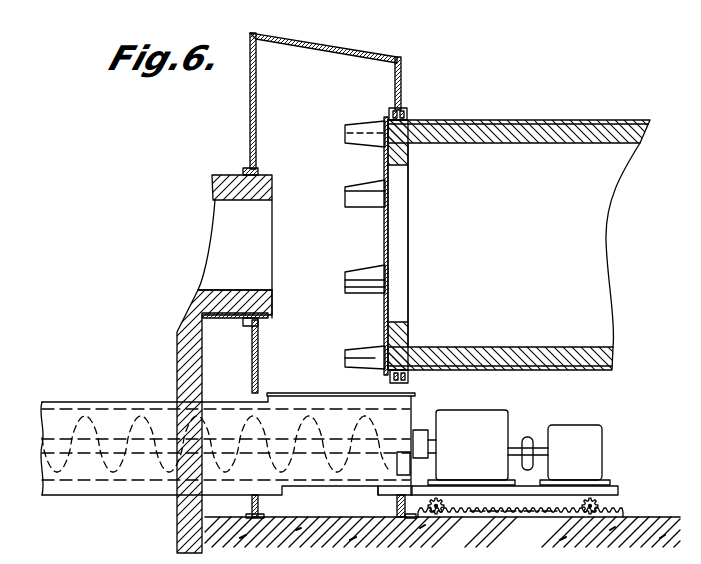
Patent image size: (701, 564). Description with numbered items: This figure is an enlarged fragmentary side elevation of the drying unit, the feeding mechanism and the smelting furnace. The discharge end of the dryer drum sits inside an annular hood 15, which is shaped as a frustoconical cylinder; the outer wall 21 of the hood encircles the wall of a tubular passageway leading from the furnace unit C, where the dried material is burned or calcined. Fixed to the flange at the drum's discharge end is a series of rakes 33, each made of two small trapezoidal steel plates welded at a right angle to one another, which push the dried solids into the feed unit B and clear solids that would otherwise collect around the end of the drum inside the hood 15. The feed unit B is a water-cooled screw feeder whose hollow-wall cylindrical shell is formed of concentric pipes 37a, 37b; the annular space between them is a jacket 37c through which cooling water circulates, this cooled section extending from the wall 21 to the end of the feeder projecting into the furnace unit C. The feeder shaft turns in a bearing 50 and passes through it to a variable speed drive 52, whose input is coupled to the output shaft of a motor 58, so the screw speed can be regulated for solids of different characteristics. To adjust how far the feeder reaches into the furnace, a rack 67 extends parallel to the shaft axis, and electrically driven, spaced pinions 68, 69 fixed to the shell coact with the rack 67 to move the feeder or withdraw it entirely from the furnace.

The annular hood 15 is at (336, 47).
The rakes 33 is at (350, 182).
The furnace unit C is at (225, 243).
The outer wall of the hood 21 is at (257, 368).
The pipe 37a is at (107, 415).
The pipe 37b is at (138, 402).
The jacket 37c is at (50, 402).
The feed unit B is at (87, 472).
The bearing 50 is at (417, 432).
The variable speed drive 52 is at (495, 412).
The motor 58 is at (592, 432).
The pinion 68 is at (437, 498).
The pinion 69 is at (600, 503).
The rack 67 is at (442, 534).